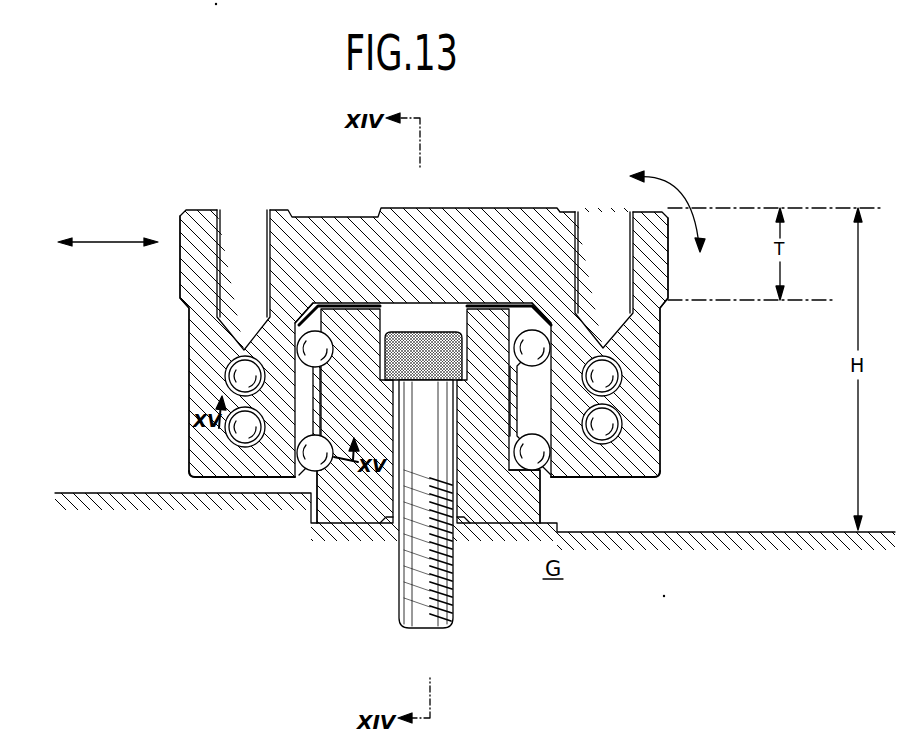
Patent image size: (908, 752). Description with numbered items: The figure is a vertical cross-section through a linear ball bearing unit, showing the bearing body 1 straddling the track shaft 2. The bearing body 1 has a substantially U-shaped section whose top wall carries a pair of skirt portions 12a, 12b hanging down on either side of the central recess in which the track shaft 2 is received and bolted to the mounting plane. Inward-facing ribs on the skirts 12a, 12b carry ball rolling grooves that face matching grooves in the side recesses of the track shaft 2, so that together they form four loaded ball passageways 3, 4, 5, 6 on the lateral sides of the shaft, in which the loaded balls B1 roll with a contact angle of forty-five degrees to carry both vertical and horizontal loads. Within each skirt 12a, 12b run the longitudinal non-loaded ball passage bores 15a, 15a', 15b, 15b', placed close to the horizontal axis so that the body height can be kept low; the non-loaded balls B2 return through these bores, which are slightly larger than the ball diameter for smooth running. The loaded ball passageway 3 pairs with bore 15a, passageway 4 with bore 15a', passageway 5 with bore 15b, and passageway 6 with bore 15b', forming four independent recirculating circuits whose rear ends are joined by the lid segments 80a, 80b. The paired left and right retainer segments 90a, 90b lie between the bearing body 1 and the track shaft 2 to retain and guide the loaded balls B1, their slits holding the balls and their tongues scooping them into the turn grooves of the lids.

The bearing body 1 is at (490, 209).
The track shaft 2 is at (485, 505).
The loaded ball passageway 3 is at (316, 302).
The loaded ball passageway 4 is at (319, 478).
The loaded ball passageway 5 is at (541, 334).
The loaded ball passageway 6 is at (541, 472).
The skirt portion 12a is at (197, 378).
The skirt portion 12b is at (641, 318).
The non-loaded ball passage bore 15a is at (186, 393).
The non-loaded ball passage bore 15a' is at (186, 430).
The non-loaded ball passage bore 15b is at (667, 383).
The non-loaded ball passage bore 15b' is at (657, 424).
The lid segment 80a is at (228, 484).
The lid segment 80b is at (621, 480).
The left retainer segment 90a is at (354, 388).
The right retainer segment 90b is at (506, 390).
The loaded balls B1 is at (300, 344).
The non-loaded balls B2 is at (228, 370).